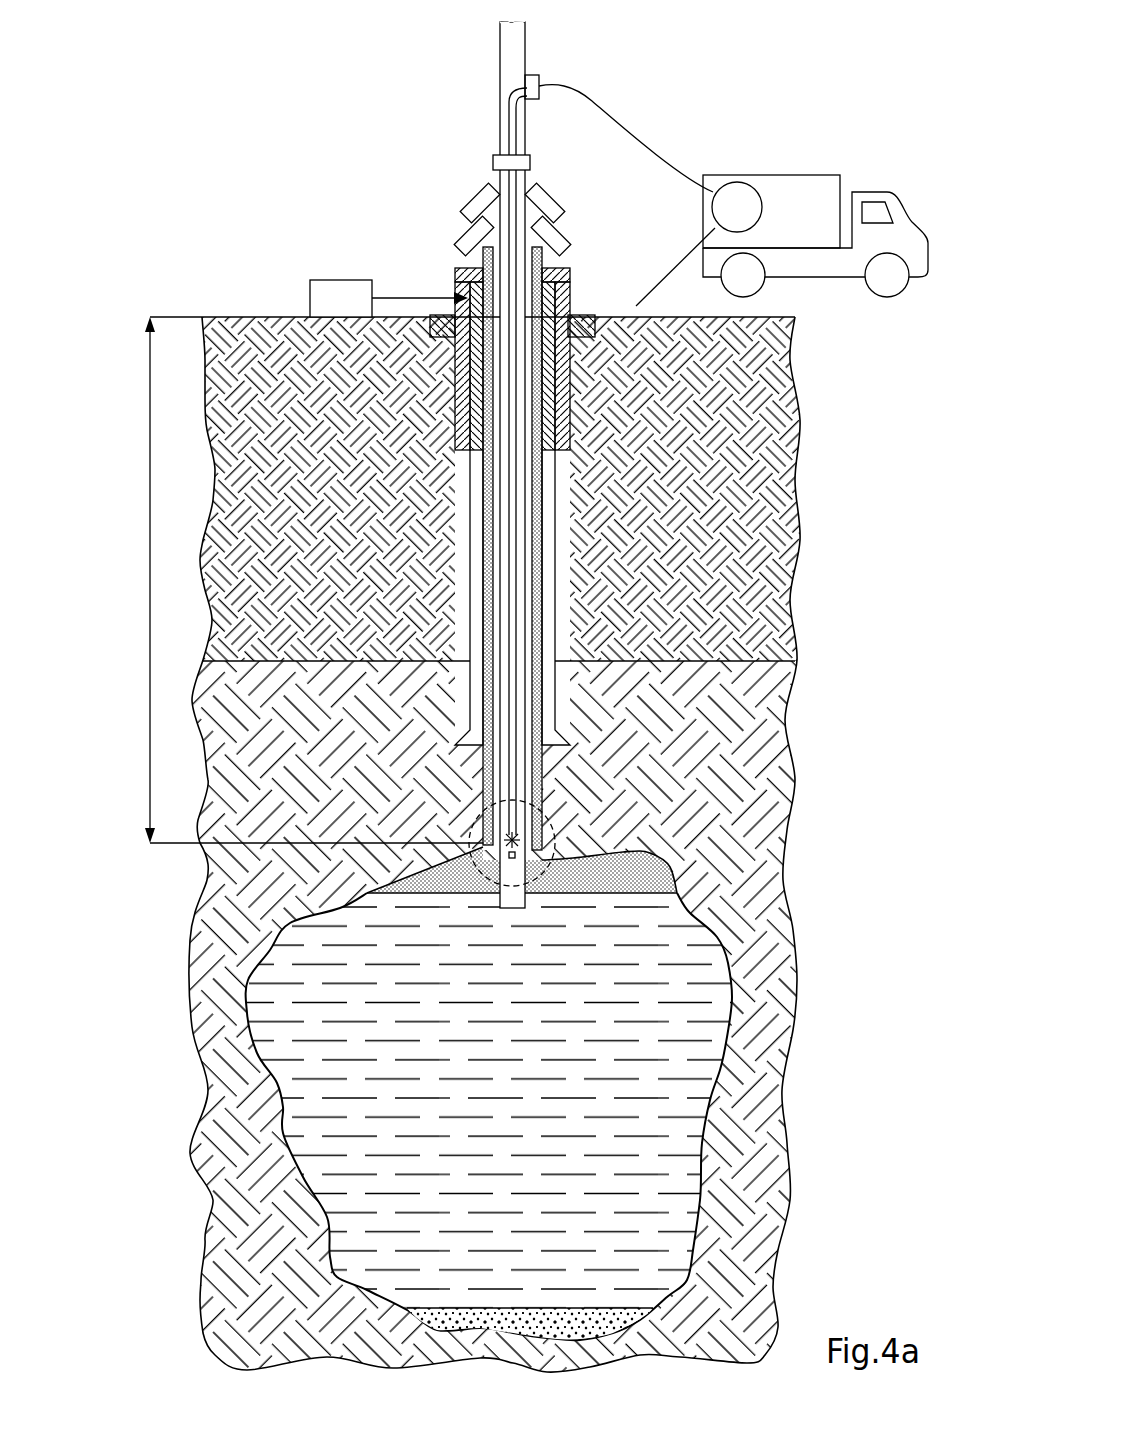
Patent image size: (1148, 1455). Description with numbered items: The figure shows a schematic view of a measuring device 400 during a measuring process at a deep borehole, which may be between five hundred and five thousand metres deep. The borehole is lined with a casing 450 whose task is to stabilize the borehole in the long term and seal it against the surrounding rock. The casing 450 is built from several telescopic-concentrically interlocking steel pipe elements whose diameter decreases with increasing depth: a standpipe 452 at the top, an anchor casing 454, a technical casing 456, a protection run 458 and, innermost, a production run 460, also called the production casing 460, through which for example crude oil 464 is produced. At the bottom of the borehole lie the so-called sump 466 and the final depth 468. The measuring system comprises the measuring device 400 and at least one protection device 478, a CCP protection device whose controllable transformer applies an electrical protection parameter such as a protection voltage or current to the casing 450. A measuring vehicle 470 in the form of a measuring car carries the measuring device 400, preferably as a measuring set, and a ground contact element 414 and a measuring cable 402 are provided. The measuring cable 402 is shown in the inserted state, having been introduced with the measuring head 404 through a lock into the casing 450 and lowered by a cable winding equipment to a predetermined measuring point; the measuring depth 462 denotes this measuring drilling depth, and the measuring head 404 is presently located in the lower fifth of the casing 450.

The measuring device 400 is at (782, 96).
The measuring cable 402 is at (616, 121).
The measuring head 404 is at (516, 838).
The ground contact element 414 is at (630, 315).
The casing 450 is at (456, 173).
The standpipe 452 is at (584, 322).
The anchor casing 454 is at (562, 407).
The technical casing 456 is at (548, 488).
The protection run 458 is at (536, 570).
The production run 460 is at (518, 623).
The measuring depth 462 is at (148, 557).
The crude oil 464 is at (673, 1107).
The sump 466 is at (467, 1320).
The final depth 468 is at (575, 1338).
The measuring vehicle 470 is at (862, 158).
The protection device 478 is at (330, 280).